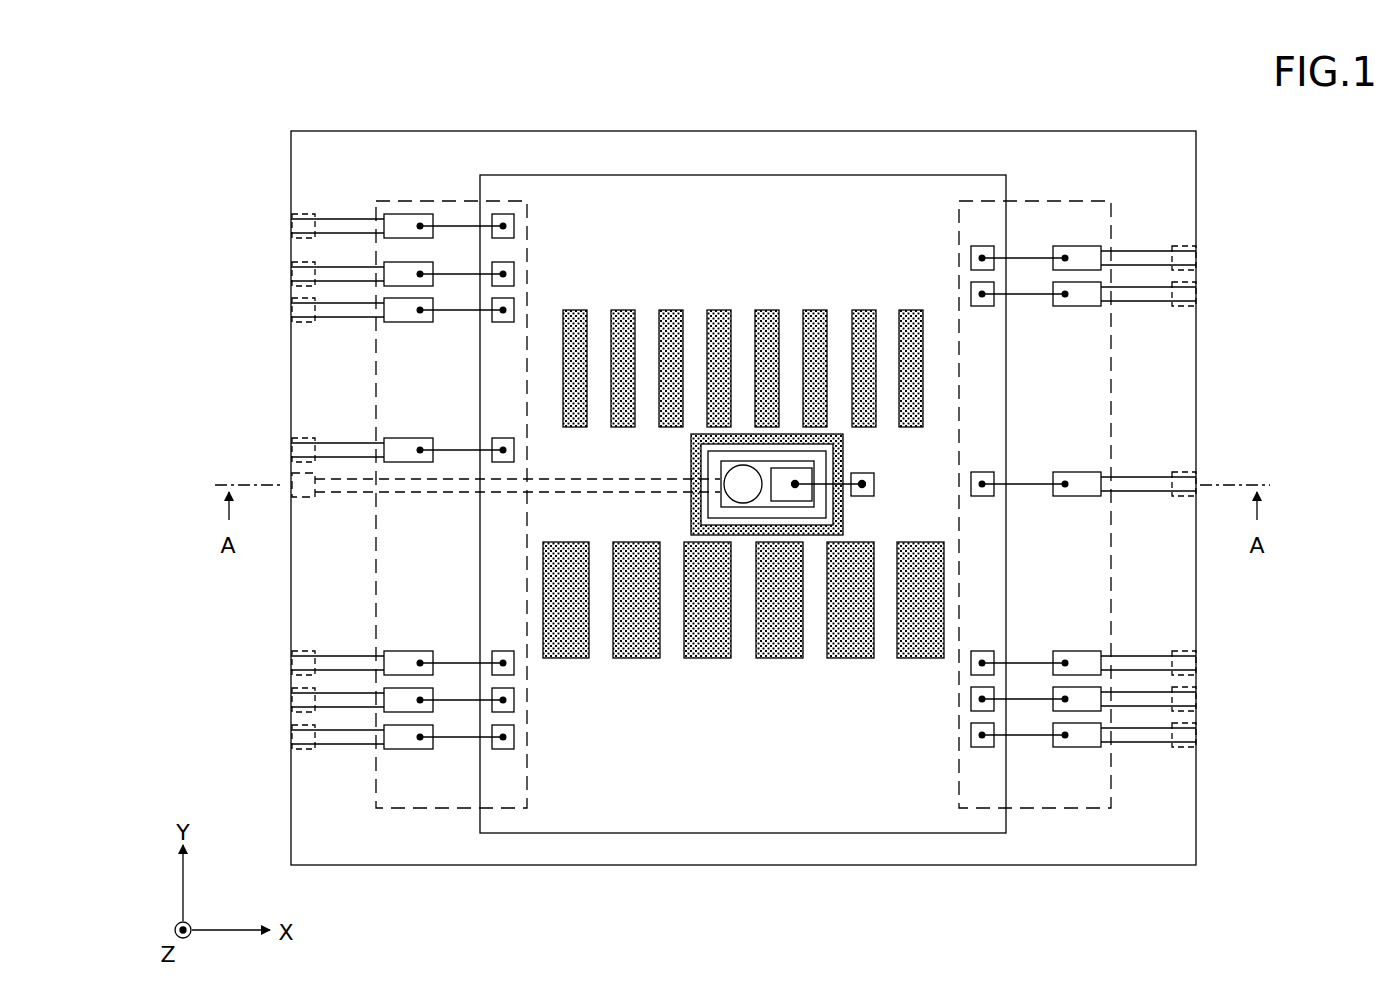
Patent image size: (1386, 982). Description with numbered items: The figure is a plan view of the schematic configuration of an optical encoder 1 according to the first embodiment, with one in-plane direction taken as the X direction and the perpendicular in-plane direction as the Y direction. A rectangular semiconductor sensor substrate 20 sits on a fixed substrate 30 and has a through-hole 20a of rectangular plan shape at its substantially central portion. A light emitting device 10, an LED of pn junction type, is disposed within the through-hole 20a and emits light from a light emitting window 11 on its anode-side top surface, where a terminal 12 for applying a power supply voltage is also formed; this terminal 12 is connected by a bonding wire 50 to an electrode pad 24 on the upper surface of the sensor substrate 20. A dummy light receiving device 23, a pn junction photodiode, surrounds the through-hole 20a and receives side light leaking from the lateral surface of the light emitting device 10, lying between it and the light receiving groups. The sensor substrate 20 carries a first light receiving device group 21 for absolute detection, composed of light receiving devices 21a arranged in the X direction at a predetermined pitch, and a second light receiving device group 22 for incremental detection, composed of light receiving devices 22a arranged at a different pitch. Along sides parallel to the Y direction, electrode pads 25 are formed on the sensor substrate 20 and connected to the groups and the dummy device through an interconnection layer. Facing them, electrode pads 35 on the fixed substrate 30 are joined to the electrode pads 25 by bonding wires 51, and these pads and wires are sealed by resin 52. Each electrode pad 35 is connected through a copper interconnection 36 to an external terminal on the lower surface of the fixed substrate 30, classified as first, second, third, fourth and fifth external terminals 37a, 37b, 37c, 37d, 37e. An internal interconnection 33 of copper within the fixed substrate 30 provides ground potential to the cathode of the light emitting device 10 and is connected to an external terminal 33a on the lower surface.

The optical encoder 1 is at (416, 99).
The light emitting device 10 is at (795, 451).
The light emitting window 11 is at (743, 465).
The terminal 12 is at (790, 468).
The sensor substrate 20 is at (940, 175).
The through-hole 20a is at (813, 517).
The first light receiving device group 21 is at (698, 692).
The light receiving device 21a is at (567, 648).
The second light receiving device group 22 is at (697, 278).
The light receiving device 22a is at (575, 322).
The dummy light receiving device 23 is at (720, 462).
The electrode pad 24 is at (870, 474).
The electrode pads 25 is at (500, 213).
The fixed substrate 30 is at (1050, 131).
The internal interconnection 33 is at (365, 494).
The external terminal 33a is at (300, 498).
The electrode pads 35 is at (397, 214).
The interconnection 36 is at (345, 218).
The first external terminal 37a is at (300, 673).
The second external terminal 37b is at (300, 284).
The third external terminal 37c is at (300, 441).
The fourth external terminal 37d is at (300, 216).
The fifth external terminal 37e is at (1188, 476).
The bonding wire 50 is at (846, 488).
The bonding wires 51 is at (460, 226).
The resin 52 is at (428, 812).